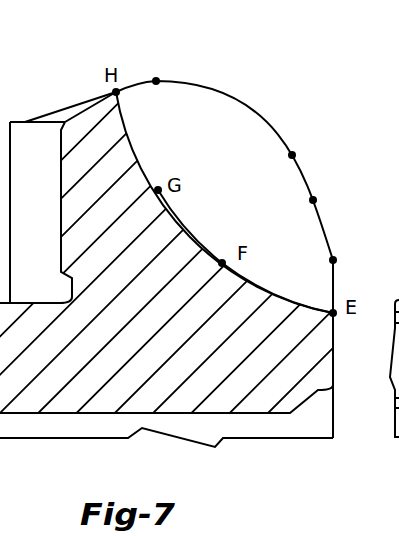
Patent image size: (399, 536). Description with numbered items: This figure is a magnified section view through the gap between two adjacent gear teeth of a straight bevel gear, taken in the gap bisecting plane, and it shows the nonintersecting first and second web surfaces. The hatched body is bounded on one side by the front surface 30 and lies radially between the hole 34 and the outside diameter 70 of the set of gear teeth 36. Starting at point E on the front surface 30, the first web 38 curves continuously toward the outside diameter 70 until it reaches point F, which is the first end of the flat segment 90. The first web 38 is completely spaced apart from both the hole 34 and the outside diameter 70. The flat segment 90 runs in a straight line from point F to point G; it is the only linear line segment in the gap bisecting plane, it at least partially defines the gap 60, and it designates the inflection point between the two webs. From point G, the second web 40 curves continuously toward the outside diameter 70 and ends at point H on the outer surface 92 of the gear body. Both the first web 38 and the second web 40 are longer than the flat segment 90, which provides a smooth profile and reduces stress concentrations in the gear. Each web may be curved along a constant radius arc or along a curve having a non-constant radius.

The body 30 is at (335, 342).
The base portion 34 is at (336, 410).
The outer arcuate surface 36 is at (248, 141).
The arcuate surface portion 38 is at (252, 284).
The inner arcuate surface 40 is at (137, 143).
The direction arrow 60 is at (296, 285).
The apex point 70 is at (156, 78).
The arc segment 90 is at (186, 232).
The tangent line 92 is at (68, 107).